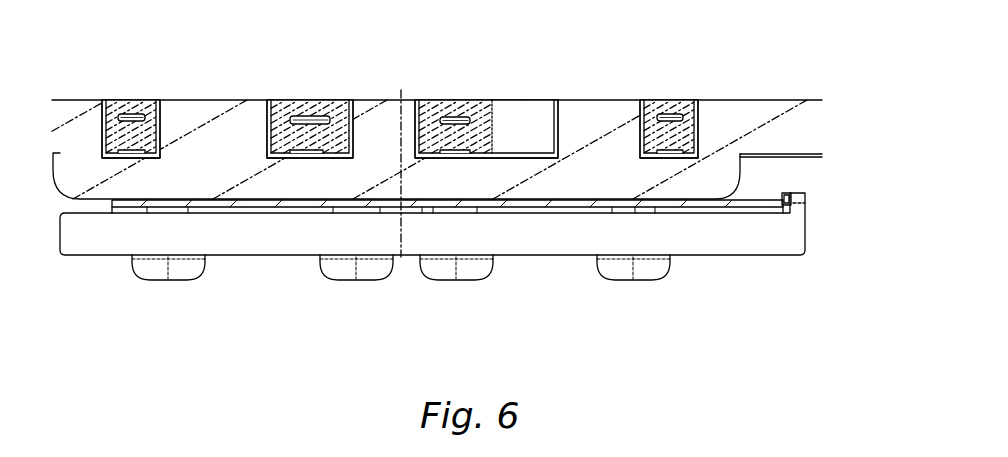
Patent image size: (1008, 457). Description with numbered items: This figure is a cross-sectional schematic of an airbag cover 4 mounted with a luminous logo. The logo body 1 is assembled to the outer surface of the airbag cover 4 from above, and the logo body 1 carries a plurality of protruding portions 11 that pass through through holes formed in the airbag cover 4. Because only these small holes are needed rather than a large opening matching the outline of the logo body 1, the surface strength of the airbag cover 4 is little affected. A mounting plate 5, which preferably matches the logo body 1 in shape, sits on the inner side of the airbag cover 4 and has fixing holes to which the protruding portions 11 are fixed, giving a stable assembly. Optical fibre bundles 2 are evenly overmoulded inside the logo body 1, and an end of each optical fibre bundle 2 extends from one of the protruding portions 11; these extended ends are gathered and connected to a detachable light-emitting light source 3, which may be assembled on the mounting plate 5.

The logo body 1 is at (678, 98).
The optical fibre bundle 2 is at (665, 112).
The light-emitting light source 3 is at (792, 193).
The airbag cover 4 is at (822, 134).
The mounting plate 5 is at (802, 240).
The protruding portion 11 is at (645, 281).